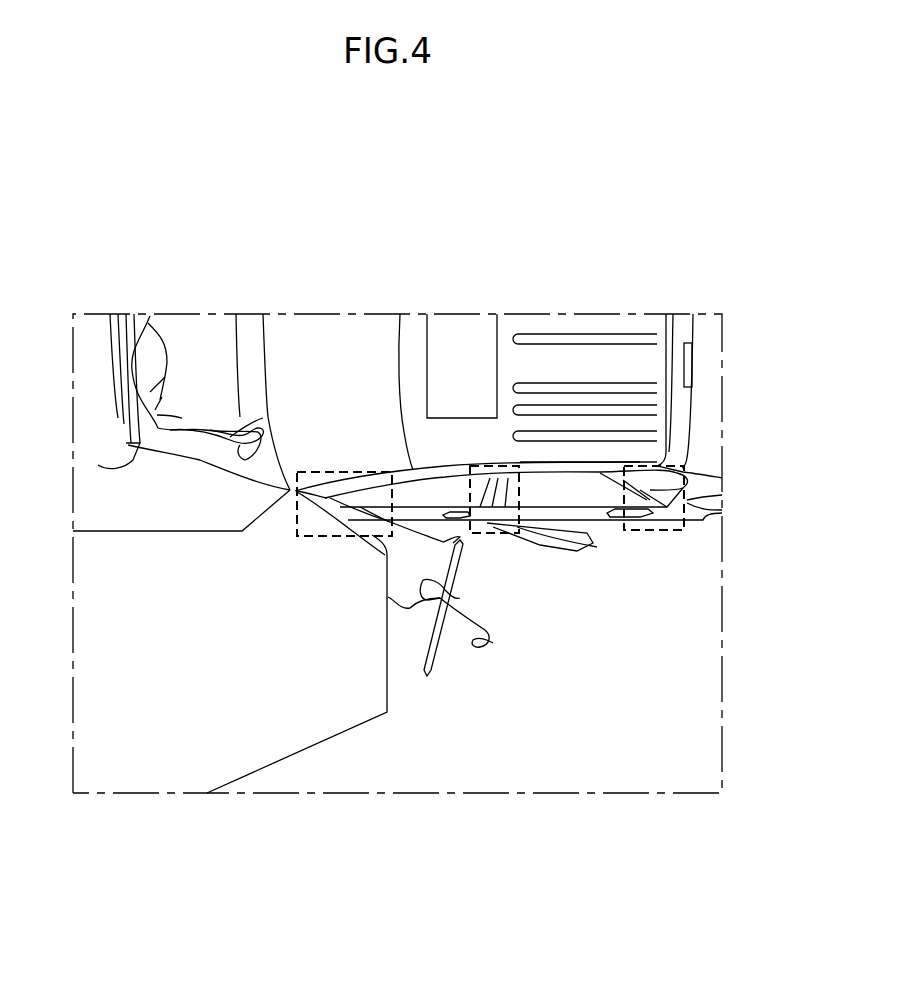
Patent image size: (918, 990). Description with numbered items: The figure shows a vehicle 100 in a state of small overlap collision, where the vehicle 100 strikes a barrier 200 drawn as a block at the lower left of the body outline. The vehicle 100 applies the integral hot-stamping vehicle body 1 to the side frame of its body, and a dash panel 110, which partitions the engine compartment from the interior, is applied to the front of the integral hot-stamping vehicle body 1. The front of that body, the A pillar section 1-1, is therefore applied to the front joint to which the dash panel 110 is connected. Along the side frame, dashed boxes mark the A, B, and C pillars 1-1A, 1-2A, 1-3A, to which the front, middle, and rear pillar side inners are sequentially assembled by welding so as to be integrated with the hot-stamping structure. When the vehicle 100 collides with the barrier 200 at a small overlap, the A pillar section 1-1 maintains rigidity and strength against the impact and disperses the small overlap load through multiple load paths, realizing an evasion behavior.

The vehicle 100 is at (537, 365).
The dash panel 110 is at (283, 318).
The integral hot-stamping vehicle body 1 is at (462, 470).
The A pillar section 1-1 is at (345, 510).
The A pillar 1-1A is at (333, 536).
The B pillar 1-2A is at (495, 537).
The C pillar 1-3A is at (647, 532).
The barrier 200 is at (312, 710).